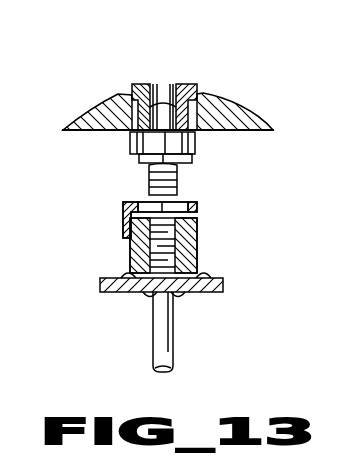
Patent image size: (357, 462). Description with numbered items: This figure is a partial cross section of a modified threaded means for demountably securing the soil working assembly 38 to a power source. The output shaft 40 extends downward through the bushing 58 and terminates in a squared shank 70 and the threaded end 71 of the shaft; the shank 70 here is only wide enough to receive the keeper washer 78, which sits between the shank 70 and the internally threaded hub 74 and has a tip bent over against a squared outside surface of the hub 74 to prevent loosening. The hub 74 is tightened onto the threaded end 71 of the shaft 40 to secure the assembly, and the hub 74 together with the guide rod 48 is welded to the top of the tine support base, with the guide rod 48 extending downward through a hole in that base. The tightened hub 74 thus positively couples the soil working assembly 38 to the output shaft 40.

The output shaft 40 is at (169, 117).
The bushing 58 is at (145, 84).
The squared shank 70 is at (183, 158).
The threaded bolt 71 is at (175, 186).
The keeper washer 78 is at (197, 207).
The internally threaded hub 74 is at (190, 247).
The soil working assembly 38 is at (236, 282).
The guide rod 48 is at (165, 337).